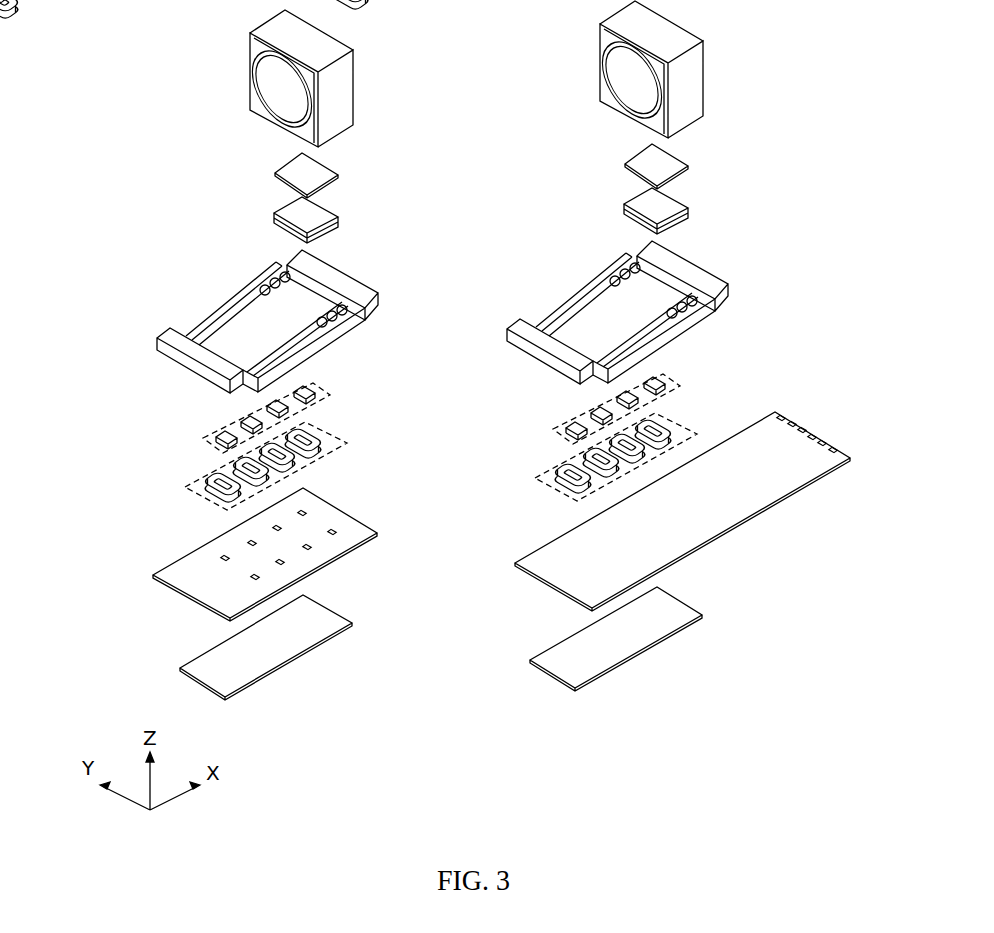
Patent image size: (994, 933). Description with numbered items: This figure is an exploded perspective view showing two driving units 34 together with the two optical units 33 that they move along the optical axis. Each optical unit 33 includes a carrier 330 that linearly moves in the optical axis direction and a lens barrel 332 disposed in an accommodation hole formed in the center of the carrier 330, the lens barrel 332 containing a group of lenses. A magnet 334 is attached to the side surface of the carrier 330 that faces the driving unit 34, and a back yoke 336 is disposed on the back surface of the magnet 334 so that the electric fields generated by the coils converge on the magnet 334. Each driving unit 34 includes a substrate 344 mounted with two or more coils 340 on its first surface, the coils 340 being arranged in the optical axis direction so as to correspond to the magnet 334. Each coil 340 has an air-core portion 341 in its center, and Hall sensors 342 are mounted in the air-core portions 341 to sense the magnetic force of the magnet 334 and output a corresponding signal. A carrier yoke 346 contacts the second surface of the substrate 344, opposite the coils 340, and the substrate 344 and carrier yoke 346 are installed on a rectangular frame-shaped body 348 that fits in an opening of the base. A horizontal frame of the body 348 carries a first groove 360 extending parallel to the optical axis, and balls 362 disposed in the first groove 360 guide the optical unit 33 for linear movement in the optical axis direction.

The optical unit 33 is at (173, 45).
The carrier 330 is at (257, 47).
The lens barrel 332 is at (270, 88).
The back yoke 336 is at (285, 170).
The magnet 334 is at (287, 199).
The first groove 360 is at (190, 330).
The ball 362 is at (318, 318).
The driving unit 34 is at (98, 363).
The frame-shaped body 348 is at (188, 360).
The Hall sensor 342 is at (205, 425).
The air-core portion 341 is at (308, 437).
The coil 340 is at (360, 255).
The substrate 344 is at (196, 560).
The carrier yoke 346 is at (210, 660).